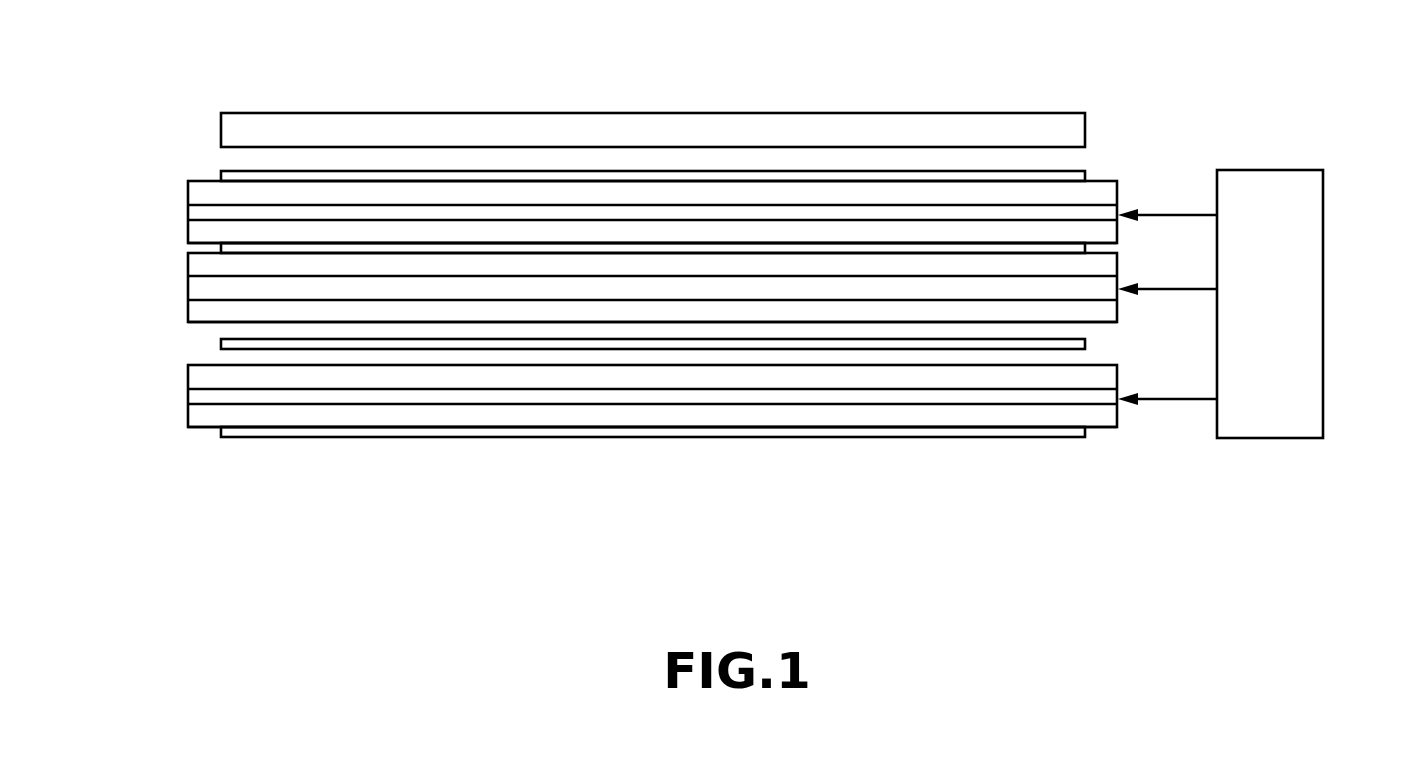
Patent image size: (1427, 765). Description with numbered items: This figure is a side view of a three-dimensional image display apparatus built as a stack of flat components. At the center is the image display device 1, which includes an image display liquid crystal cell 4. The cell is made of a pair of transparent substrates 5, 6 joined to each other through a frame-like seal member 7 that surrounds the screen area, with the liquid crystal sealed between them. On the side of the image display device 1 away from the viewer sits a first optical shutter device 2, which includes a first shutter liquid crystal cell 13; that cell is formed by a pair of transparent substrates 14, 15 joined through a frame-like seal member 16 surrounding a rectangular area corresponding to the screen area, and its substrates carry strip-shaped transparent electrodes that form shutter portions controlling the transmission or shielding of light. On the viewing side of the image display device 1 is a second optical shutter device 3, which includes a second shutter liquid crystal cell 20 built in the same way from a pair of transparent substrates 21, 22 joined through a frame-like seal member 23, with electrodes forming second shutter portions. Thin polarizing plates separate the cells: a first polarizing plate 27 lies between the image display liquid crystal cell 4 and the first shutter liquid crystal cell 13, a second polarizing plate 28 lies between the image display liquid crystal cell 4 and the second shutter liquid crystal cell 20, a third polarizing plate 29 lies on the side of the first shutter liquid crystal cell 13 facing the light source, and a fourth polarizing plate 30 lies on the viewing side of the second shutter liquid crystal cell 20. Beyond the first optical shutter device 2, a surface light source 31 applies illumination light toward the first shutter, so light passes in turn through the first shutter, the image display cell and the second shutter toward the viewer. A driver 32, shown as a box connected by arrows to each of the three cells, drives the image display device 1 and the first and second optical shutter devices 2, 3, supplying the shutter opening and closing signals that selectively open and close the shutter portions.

The image display device 1 is at (645, 377).
The first optical shutter device 2 is at (625, 136).
The second optical shutter device 3 is at (634, 433).
The image display liquid crystal cell 4 is at (602, 377).
The transparent substrate 5 is at (332, 260).
The transparent substrate 6 is at (468, 310).
The seal member 7 is at (400, 287).
The first shutter liquid crystal cell 13 is at (591, 136).
The transparent substrate 14 is at (383, 188).
The transparent substrate 15 is at (570, 232).
The seal member 16 is at (476, 210).
The second shutter liquid crystal cell 20 is at (590, 433).
The transparent substrate 21 is at (593, 377).
The transparent substrate 22 is at (777, 417).
The seal member 23 is at (682, 395).
The first polarizing plate 27 is at (900, 248).
The second polarizing plate 28 is at (900, 345).
The third polarizing plate 29 is at (1014, 178).
The fourth polarizing plate 30 is at (1003, 437).
The surface light source 31 is at (289, 122).
The driver 32 is at (1323, 234).